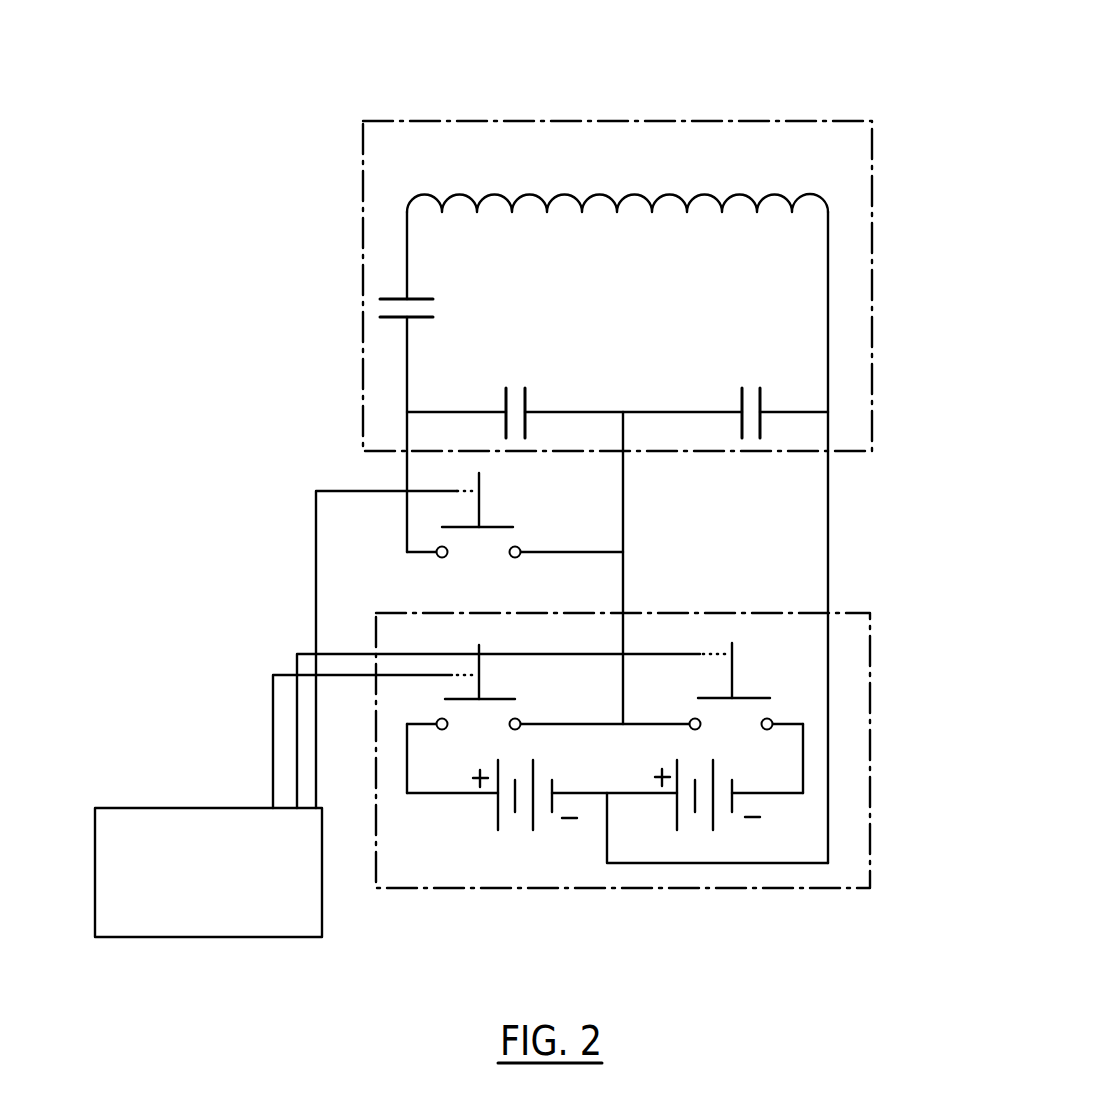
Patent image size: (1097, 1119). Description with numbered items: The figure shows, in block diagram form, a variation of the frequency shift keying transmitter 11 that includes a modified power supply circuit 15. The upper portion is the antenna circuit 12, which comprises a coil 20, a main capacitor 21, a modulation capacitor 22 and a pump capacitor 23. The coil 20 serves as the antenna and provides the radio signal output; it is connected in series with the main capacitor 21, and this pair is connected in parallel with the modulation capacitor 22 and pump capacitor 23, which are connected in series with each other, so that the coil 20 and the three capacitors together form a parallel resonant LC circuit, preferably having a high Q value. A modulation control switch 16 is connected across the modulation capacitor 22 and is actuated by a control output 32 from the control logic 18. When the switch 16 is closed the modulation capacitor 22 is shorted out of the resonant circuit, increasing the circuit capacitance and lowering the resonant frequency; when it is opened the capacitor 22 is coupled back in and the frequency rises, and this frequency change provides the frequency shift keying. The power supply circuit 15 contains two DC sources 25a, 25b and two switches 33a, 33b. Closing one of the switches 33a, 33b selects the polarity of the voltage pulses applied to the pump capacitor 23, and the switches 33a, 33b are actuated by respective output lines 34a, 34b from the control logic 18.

The FSK transmitter 11 is at (903, 60).
The antenna circuit 12 is at (763, 117).
The power supply circuit 15 is at (852, 610).
The modulation control switch 16 is at (498, 512).
The control logic 18 is at (160, 807).
The coil 20 is at (597, 198).
The main capacitor 21 is at (416, 297).
The modulation capacitor 22 is at (528, 398).
The pump capacitor 23 is at (762, 398).
The DC source 25a is at (482, 838).
The DC source 25b is at (728, 824).
The control output 32 is at (353, 490).
The switch 33a is at (514, 682).
The switch 33b is at (754, 676).
The output line 34a is at (338, 676).
The output line 34b is at (323, 652).